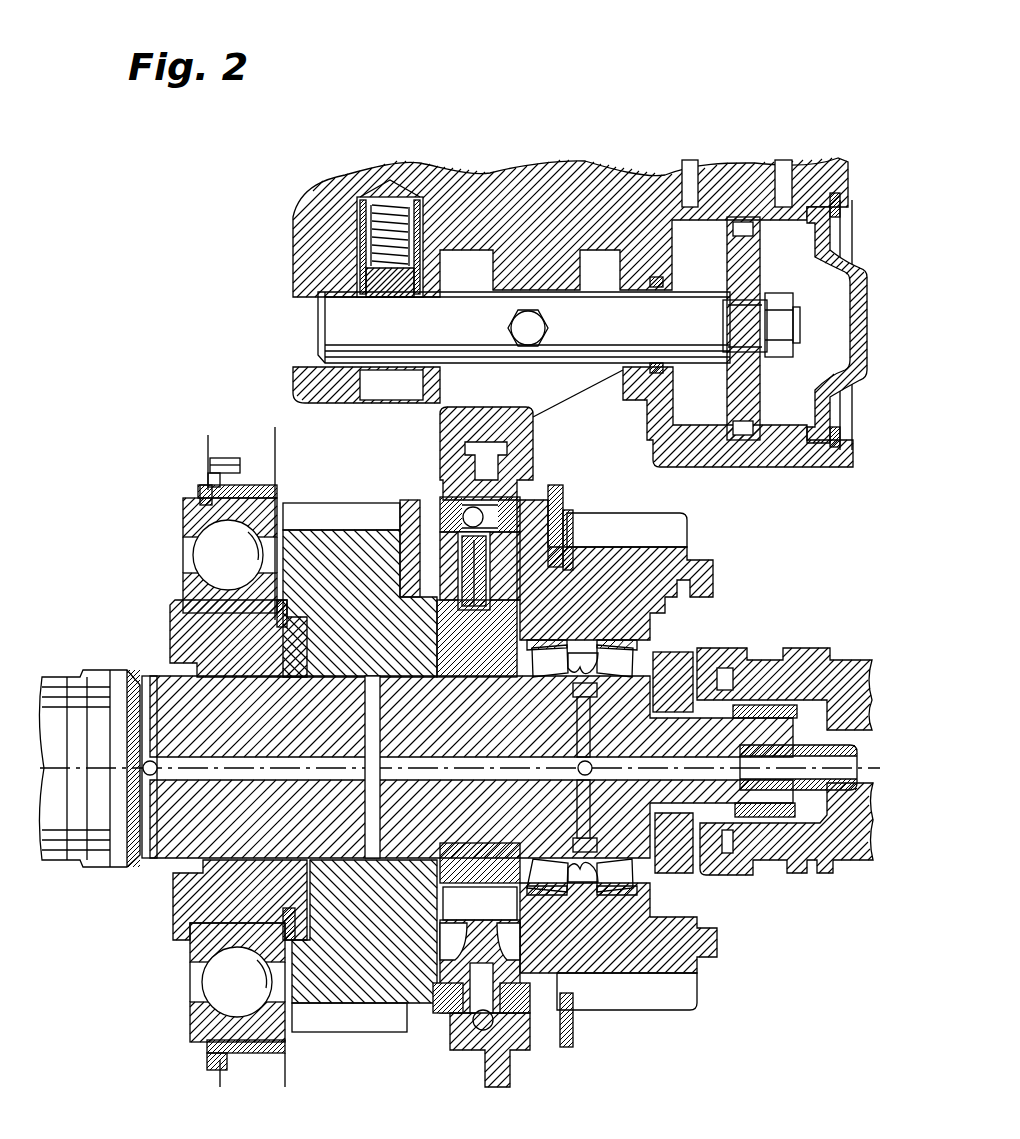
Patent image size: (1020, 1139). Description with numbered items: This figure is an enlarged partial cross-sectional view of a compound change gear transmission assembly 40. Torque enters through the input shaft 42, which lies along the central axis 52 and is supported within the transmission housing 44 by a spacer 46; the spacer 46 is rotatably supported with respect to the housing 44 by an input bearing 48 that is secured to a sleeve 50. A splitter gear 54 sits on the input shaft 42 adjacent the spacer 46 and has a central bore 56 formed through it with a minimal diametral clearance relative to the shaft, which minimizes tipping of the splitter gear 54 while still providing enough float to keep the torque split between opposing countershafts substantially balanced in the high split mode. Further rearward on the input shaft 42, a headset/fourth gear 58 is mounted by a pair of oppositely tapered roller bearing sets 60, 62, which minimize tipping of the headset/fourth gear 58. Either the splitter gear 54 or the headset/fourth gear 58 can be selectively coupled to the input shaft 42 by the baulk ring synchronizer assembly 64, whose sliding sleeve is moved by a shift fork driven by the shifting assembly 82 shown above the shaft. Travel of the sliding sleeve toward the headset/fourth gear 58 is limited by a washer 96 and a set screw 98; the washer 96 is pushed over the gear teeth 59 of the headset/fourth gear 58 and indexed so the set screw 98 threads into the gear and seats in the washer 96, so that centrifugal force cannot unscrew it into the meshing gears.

The compound change gear transmission assembly 40 is at (198, 411).
The input shaft 42 is at (165, 862).
The transmission housing 44 is at (228, 445).
The spacer 46 is at (180, 637).
The input bearing 48 is at (222, 552).
The sleeve 50 is at (228, 505).
The central axis 52 is at (108, 866).
The splitter gear 54 is at (345, 1018).
The central bore 56 is at (335, 690).
The headset/fourth gear 58 is at (650, 622).
The gear teeth 59 is at (652, 535).
The tapered roller bearing set 60 is at (530, 672).
The tapered roller bearing set 62 is at (615, 682).
The baulk ring synchronizer assembly 64 is at (518, 1053).
The shifting assembly 82 is at (296, 336).
The washer 96 is at (553, 500).
The set screw 98 is at (570, 512).